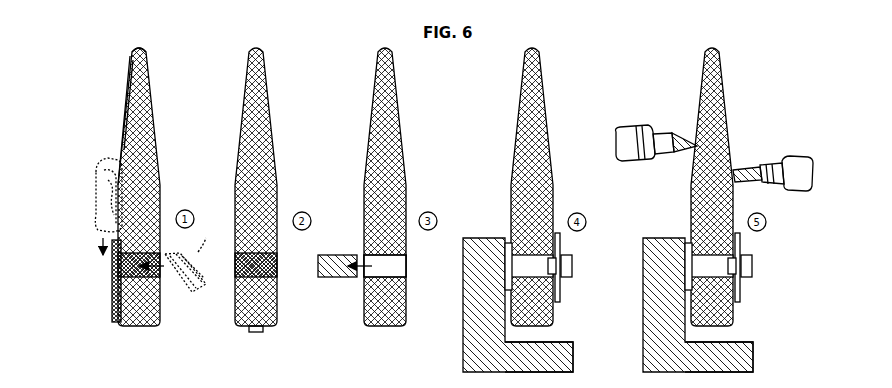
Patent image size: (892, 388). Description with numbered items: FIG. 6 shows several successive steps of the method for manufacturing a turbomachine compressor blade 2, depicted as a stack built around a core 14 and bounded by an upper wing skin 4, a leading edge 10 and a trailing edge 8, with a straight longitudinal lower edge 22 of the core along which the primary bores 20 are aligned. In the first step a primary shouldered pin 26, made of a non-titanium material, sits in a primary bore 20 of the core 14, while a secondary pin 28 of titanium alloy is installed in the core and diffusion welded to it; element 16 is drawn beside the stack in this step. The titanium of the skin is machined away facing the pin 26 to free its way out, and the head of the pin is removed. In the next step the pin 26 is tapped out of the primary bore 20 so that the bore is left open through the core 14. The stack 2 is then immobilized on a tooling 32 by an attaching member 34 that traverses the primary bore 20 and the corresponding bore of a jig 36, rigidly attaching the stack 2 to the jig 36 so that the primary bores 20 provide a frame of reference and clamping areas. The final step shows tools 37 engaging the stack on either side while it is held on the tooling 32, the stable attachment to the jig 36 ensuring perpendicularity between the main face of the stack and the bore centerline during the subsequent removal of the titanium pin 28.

The blade 2 is at (141, 96).
The upper wing skin 4 is at (142, 92).
The trailing edge 8 is at (122, 118).
The leading edge 10 is at (140, 50).
The core 14 is at (146, 189).
The coating strip 16 is at (115, 303).
The primary bore 20 is at (394, 265).
The longitudinal lower edge 22 is at (250, 333).
The primary shouldered pin 26 is at (268, 328).
The secondary pin 28 is at (127, 292).
The tooling 32 is at (540, 360).
The attaching member 34 is at (562, 287).
The jig 36 is at (489, 315).
The tool 37 is at (740, 215).